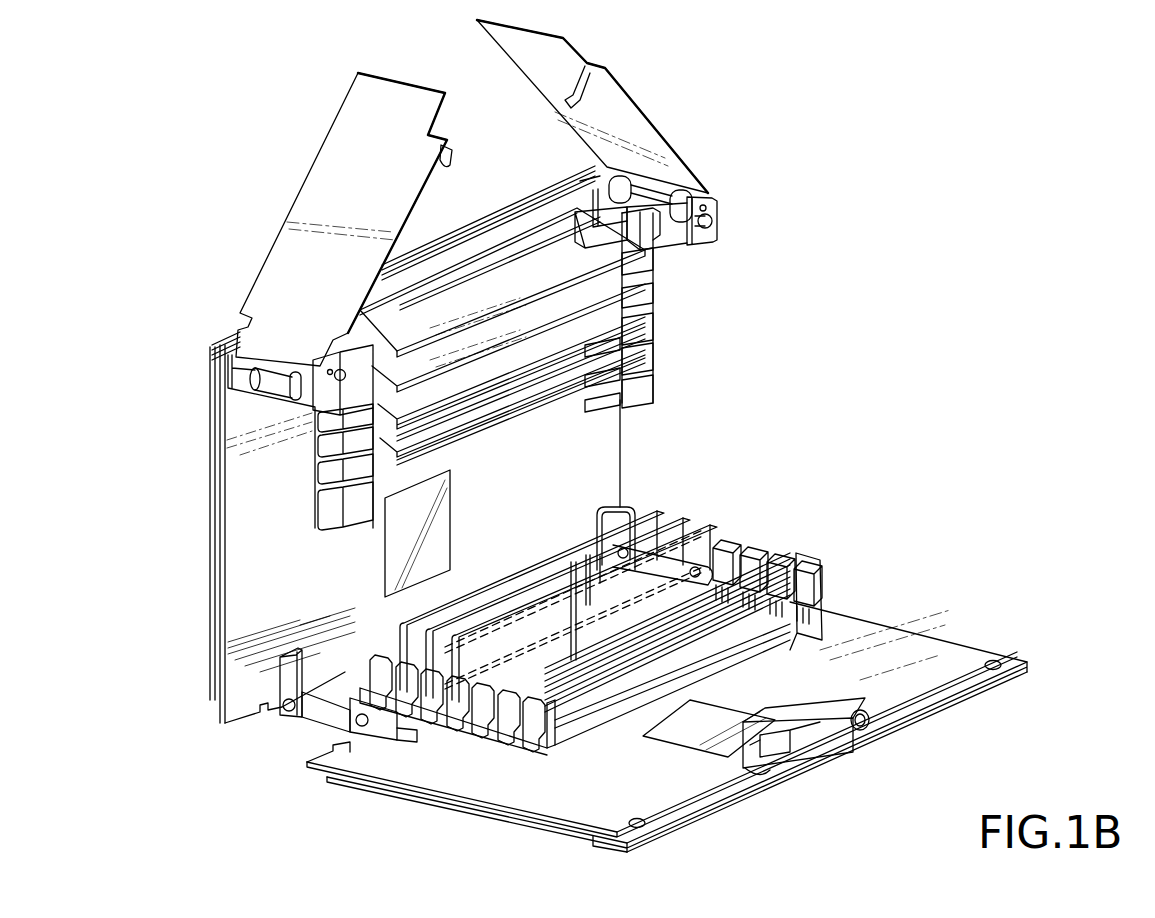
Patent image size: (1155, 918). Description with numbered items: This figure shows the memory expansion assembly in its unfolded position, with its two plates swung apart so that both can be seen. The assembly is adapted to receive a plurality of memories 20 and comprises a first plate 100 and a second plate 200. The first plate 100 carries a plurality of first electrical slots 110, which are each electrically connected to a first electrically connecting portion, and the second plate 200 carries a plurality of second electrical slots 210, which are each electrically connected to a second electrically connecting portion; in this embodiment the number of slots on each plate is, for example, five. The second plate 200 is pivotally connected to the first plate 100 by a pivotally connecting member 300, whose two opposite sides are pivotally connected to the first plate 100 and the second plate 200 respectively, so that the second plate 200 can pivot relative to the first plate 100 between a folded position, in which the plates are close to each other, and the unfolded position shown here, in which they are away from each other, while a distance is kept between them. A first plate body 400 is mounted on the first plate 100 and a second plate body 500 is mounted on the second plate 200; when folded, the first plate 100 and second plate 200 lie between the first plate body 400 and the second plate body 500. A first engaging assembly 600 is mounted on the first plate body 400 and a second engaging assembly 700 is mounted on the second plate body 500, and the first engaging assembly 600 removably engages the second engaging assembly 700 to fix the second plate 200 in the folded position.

The first plate 100 is at (268, 587).
The first electrical slots 110 is at (622, 391).
The memories 20 is at (685, 549).
The second electrical slots 210 is at (807, 628).
The first plate body 400 is at (212, 536).
The first engaging assembly 600 is at (722, 166).
The pivotally connecting member 300 is at (330, 712).
The second plate 200 is at (453, 777).
The second plate body 500 is at (465, 815).
The second engaging assembly 700 is at (852, 760).